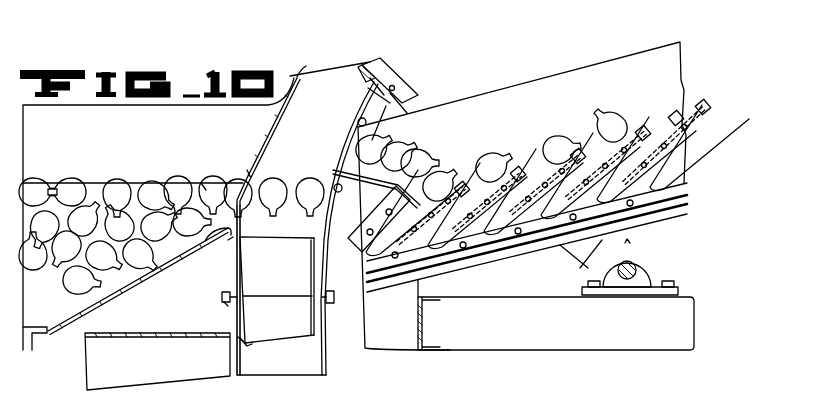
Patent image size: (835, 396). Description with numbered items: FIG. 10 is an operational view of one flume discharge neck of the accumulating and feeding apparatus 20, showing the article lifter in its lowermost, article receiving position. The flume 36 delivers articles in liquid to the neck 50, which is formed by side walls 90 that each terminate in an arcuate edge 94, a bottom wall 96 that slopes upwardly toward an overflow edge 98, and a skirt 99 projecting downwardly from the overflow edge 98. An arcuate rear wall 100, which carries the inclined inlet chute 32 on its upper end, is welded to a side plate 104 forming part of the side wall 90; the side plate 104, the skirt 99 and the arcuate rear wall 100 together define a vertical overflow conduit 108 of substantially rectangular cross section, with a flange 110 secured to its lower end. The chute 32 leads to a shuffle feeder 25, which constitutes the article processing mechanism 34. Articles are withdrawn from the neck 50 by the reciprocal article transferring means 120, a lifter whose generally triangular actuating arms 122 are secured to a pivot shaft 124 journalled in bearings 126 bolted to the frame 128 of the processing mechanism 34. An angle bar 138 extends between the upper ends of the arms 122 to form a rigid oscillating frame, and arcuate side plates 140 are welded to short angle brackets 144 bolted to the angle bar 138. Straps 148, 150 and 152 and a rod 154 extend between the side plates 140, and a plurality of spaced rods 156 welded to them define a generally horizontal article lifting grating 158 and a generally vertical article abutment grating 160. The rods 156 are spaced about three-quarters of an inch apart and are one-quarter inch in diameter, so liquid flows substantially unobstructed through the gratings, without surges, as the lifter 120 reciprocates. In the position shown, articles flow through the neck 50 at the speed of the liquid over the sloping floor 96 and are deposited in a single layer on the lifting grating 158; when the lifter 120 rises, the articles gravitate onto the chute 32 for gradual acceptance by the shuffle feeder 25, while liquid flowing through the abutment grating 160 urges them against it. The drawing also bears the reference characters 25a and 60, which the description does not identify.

The accumulating and feeding apparatus 20 is at (326, 50).
The shuffle feeder 25 is at (680, 163).
The conveyor blocks 25a is at (518, 168).
The inlet chute 32 is at (363, 166).
The article processing mechanism 34 is at (557, 96).
The flume 36 is at (302, 69).
The flume discharge neck 50 is at (105, 160).
The reject bin 60 is at (143, 373).
The side wall 90 is at (247, 135).
The arcuate edge 94 is at (358, 119).
The bottom wall 96 is at (116, 293).
The overflow edge 98 is at (233, 237).
The skirt 99 is at (201, 183).
The arcuate rear wall 100 is at (336, 178).
The side plate 104 is at (235, 288).
The vertical overflow conduit 108 is at (307, 288).
The flange 110 is at (222, 298).
The reciprocal article transferring means 120 is at (228, 276).
The actuating arm 122 is at (400, 103).
The pivot shaft 124 is at (637, 270).
The bearing 126 is at (642, 256).
The frame 128 is at (560, 329).
The angle bar 138 is at (380, 64).
The arcuate side plate 140 is at (320, 149).
The angle bracket 144 is at (356, 85).
The strap 148 is at (245, 341).
The strap 150 is at (313, 326).
The strap 152 is at (307, 259).
The rod 154 is at (240, 243).
The spaced rods 156 is at (294, 242).
The article lifting grating 158 is at (247, 170).
The article abutment grating 160 is at (240, 341).